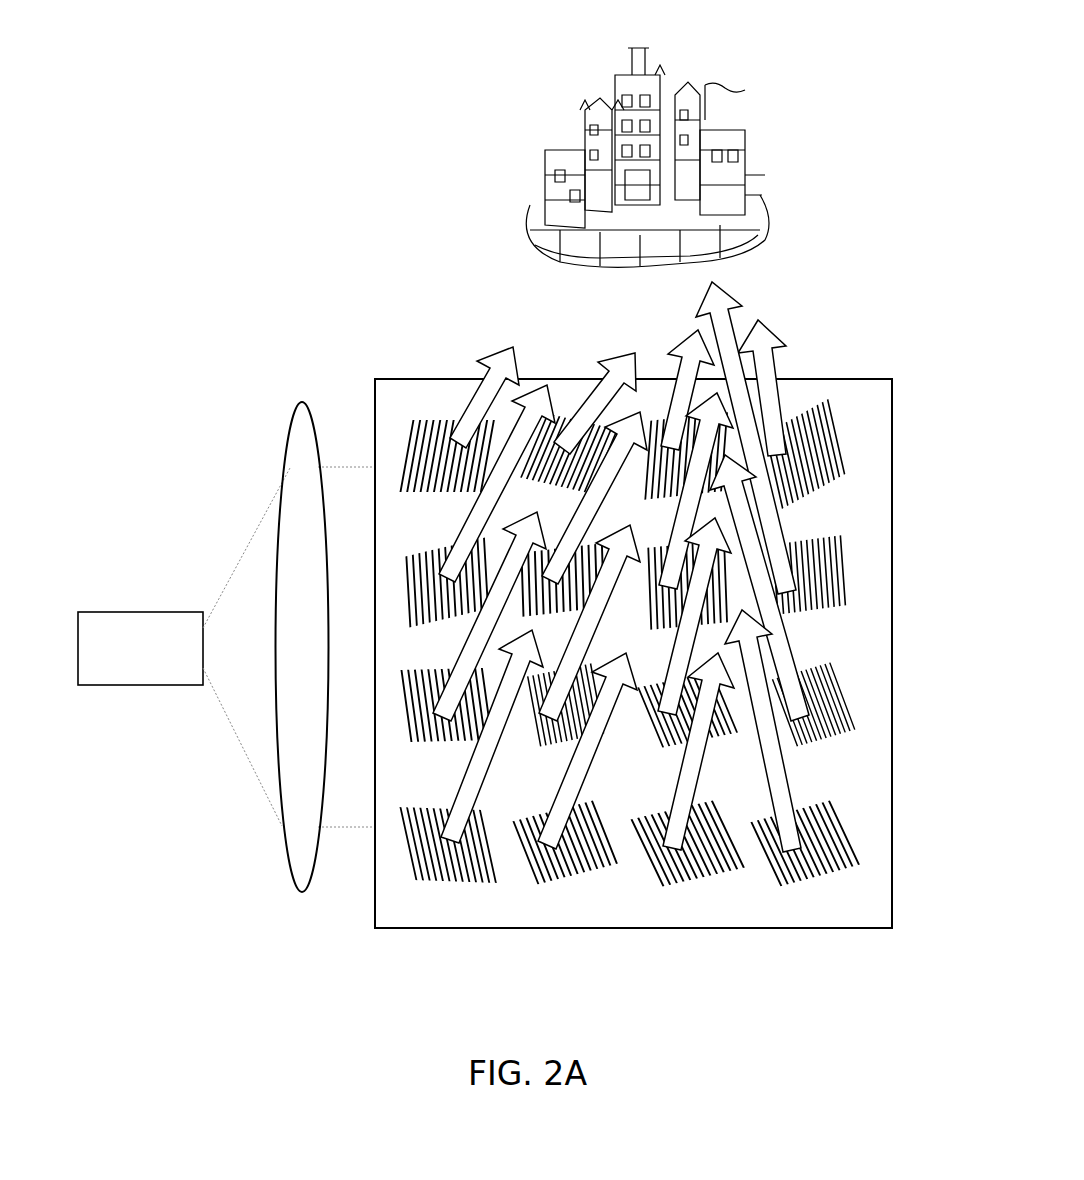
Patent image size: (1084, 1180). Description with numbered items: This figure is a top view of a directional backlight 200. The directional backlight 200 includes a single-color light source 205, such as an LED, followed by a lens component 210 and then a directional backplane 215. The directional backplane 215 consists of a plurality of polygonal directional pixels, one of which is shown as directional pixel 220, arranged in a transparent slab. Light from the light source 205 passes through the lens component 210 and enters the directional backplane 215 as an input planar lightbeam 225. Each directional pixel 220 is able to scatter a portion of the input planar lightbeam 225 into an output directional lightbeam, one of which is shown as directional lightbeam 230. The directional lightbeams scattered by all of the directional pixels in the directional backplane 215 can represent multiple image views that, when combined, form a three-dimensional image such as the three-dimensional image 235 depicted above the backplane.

The directional backlight 200 is at (318, 158).
The single-color light source 205 is at (103, 610).
The lens component 210 is at (287, 448).
The directional backplane 215 is at (432, 378).
The directional pixel 220 is at (415, 417).
The input planar lightbeam 225 is at (330, 467).
The directional lightbeam 230 is at (505, 365).
The 3D image 235 is at (540, 160).